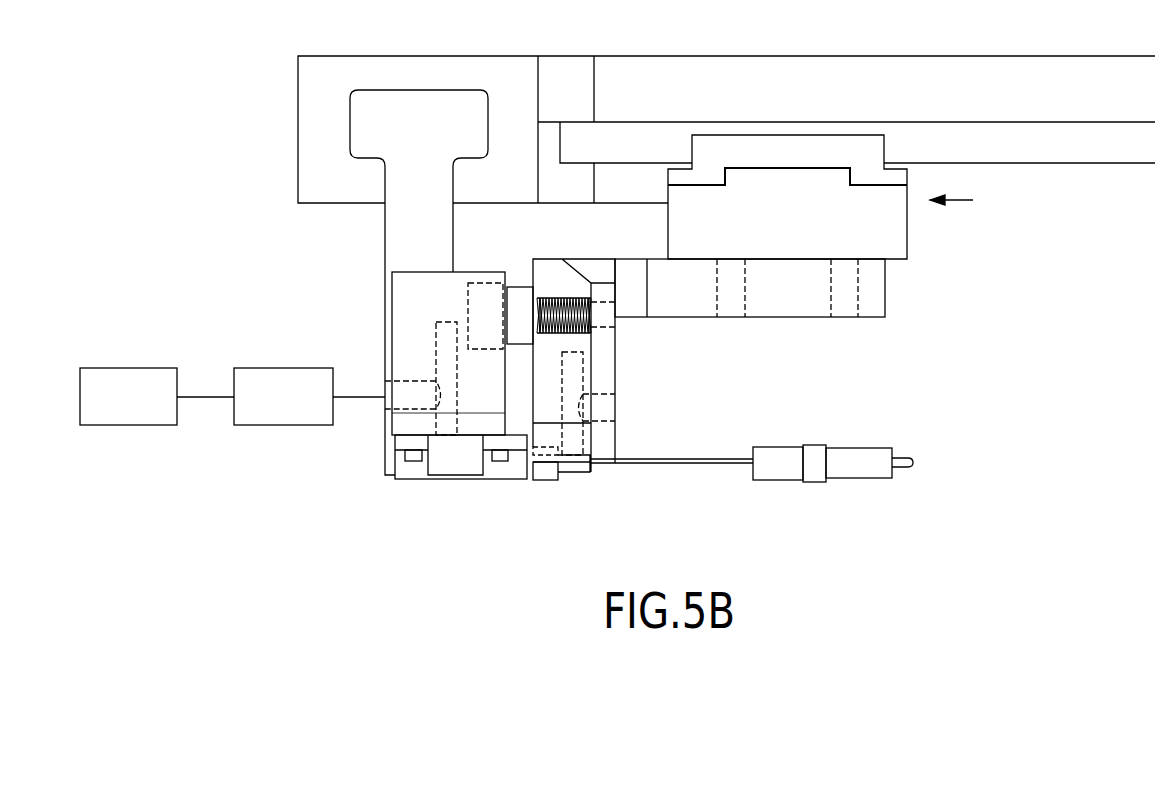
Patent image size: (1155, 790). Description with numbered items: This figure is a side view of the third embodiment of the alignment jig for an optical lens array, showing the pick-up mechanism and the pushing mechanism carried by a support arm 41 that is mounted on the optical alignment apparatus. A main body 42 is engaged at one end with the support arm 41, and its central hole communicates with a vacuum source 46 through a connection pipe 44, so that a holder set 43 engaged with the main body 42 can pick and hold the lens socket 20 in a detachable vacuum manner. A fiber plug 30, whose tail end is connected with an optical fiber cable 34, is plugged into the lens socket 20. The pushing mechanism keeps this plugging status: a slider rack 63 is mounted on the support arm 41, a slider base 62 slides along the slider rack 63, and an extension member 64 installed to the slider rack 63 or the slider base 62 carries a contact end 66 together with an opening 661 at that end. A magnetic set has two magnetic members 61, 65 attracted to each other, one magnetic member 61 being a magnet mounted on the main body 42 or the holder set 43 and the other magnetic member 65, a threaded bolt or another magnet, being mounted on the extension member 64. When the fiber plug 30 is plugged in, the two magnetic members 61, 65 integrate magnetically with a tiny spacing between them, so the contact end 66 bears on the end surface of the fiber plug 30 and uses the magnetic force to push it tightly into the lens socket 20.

The support arm 41 is at (312, 123).
The main body 42 is at (397, 247).
The holder set 43 is at (395, 427).
The connection pipe 44 is at (252, 373).
The vacuum source 46 is at (117, 378).
The lens socket 20 is at (405, 474).
The through hole 661 is at (537, 450).
The fiber plug 30 is at (548, 481).
The contact end 66 is at (605, 451).
The optical fiber cable 34 is at (683, 462).
The magnetic member 65 is at (585, 332).
The magnetic member 61 is at (518, 336).
The extension member 64 is at (867, 311).
The slider base 62 is at (895, 217).
The slider rack 63 is at (1012, 142).